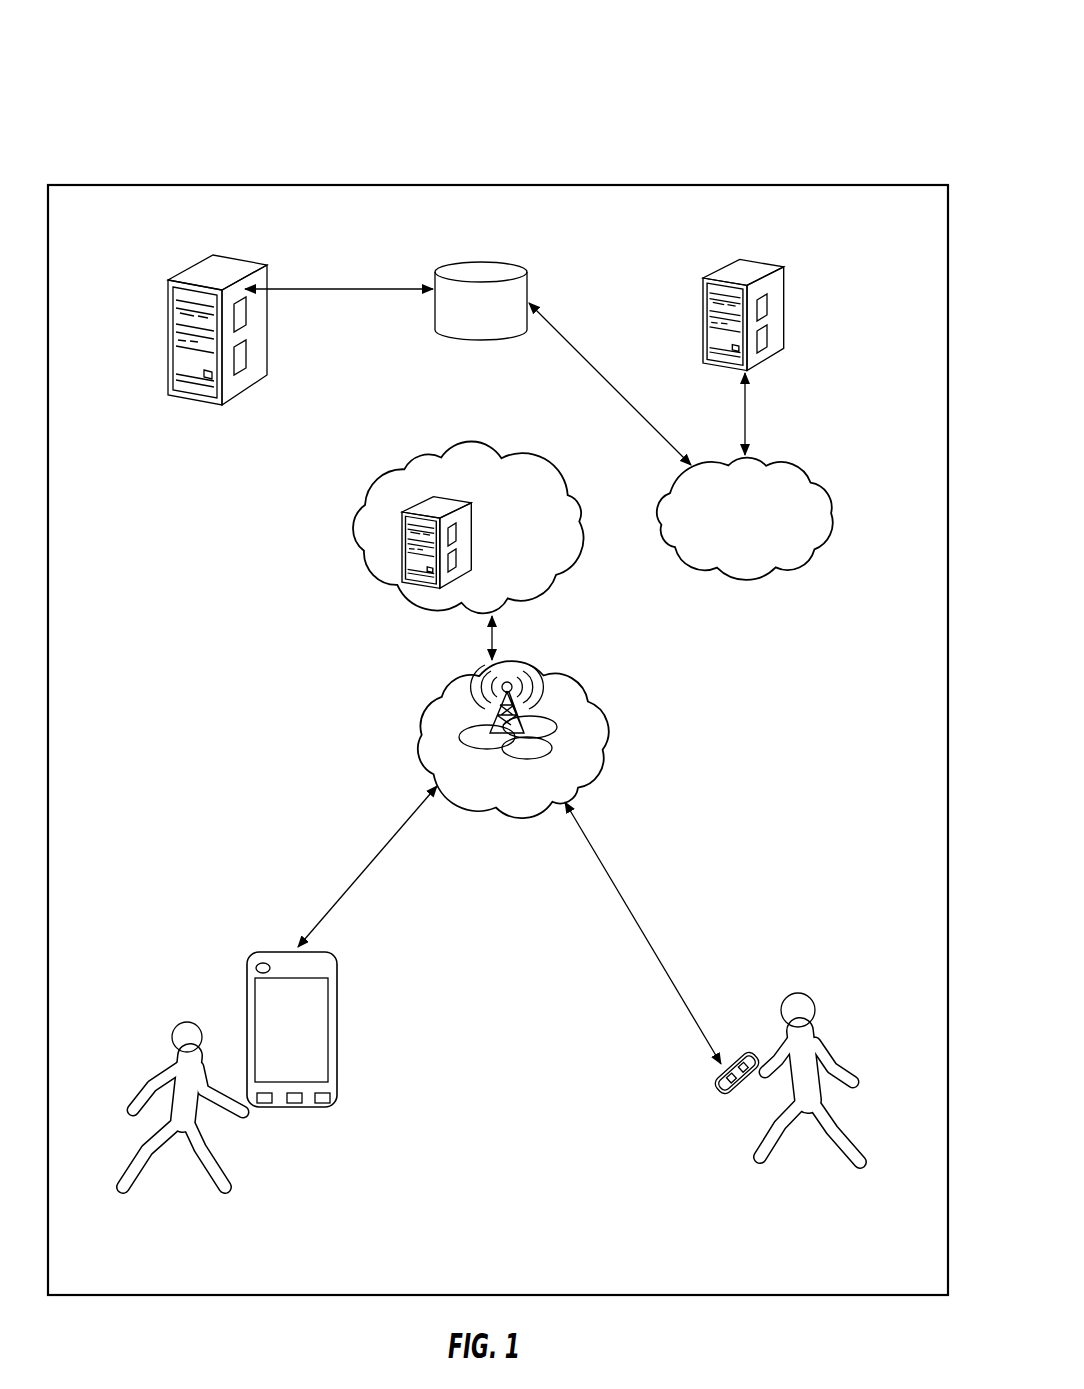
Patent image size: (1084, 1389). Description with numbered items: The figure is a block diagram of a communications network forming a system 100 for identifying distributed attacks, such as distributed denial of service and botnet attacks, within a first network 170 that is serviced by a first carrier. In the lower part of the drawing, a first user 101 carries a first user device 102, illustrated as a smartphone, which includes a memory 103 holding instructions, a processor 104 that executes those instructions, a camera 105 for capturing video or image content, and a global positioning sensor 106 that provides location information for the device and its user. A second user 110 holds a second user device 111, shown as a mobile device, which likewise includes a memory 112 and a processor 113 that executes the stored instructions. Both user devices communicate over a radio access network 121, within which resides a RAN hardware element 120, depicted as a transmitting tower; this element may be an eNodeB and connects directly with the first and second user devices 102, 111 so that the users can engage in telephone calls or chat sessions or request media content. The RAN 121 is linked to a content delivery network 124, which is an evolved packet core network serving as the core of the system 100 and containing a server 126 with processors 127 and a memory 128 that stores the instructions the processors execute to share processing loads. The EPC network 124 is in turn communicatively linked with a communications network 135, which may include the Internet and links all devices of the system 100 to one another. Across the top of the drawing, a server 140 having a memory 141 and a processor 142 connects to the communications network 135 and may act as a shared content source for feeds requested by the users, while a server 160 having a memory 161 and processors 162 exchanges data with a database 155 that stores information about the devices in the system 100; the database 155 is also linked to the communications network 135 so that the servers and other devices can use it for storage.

The system 100 is at (668, 113).
The first network 170 is at (836, 183).
The server 160 is at (168, 300).
The memory 161 is at (243, 358).
The processors 162 is at (243, 312).
The database 155 is at (497, 318).
The server 140 is at (703, 287).
The memory 141 is at (763, 303).
The processor 142 is at (763, 340).
The communications network 135 is at (802, 545).
The content delivery network 124 is at (548, 593).
The server 126 is at (403, 557).
The processors 127 is at (452, 537).
The memory 128 is at (452, 562).
The radio access network 121 is at (417, 773).
The RAN hardware element 120 is at (490, 717).
The first user 101 is at (142, 1192).
The first user device 102 is at (247, 1007).
The camera 105 is at (256, 968).
The memory 103 is at (263, 1107).
The global positioning sensor 106 is at (292, 1107).
The processor 104 is at (322, 1107).
The second user 110 is at (860, 1167).
The second user device 111 is at (722, 1080).
The memory 112 is at (733, 1090).
The processor 113 is at (739, 1063).